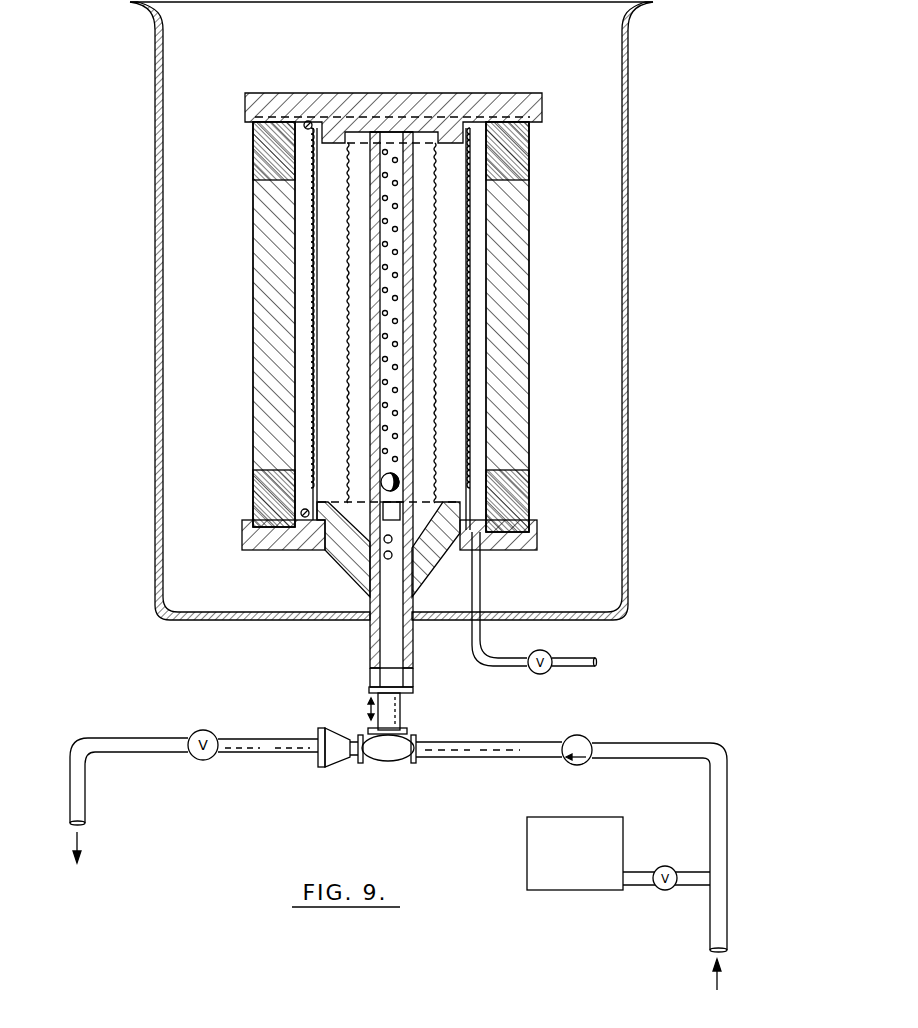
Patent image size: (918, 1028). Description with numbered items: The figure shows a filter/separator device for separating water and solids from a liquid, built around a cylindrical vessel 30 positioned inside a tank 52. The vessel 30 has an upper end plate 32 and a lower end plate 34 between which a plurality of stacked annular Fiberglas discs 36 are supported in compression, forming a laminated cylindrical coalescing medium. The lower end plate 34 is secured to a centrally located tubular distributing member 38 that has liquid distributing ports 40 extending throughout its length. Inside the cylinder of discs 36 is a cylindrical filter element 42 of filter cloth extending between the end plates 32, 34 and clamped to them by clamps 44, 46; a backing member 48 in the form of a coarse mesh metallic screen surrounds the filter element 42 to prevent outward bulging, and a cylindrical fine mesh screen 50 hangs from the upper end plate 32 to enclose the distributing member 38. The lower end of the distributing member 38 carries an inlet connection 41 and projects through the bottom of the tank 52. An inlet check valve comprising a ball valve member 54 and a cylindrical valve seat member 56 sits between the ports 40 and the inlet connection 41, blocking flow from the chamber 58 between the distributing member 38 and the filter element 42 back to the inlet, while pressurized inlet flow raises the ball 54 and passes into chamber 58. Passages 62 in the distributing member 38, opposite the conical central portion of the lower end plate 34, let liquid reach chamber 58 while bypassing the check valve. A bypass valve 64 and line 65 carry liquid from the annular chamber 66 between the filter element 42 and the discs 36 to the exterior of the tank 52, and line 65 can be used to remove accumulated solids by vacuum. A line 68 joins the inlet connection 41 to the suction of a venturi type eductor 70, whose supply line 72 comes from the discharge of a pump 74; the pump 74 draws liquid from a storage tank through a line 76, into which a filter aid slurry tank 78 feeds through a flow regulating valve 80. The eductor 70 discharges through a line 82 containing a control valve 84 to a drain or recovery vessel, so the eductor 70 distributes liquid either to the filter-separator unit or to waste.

The cylindrical vessel 30 is at (548, 80).
The upper end plate 32 is at (330, 103).
The lower end plate 34 is at (270, 547).
The stacked annular Fiberglas discs 36 is at (262, 508).
The tubular distributing member 38 is at (415, 413).
The liquid distributing ports 40 is at (383, 363).
The inlet connection 41 is at (411, 691).
The cylindrical filter element 42 is at (467, 275).
The clamp 44 is at (306, 120).
The clamp 46 is at (305, 520).
The backing member 48 is at (310, 360).
The cylindrical fine mesh screen 50 is at (434, 219).
The tank 52 is at (627, 300).
The ball valve member 54 is at (400, 478).
The cylindrical valve seat member 56 is at (410, 505).
The chamber 58 is at (341, 299).
The passages 62 is at (393, 560).
The bypass valve 64 is at (540, 674).
The line 65 is at (592, 668).
The annular chamber 66 is at (477, 343).
The line 68 is at (400, 712).
The eductor 70 is at (385, 761).
The supply line 72 is at (497, 745).
The pump 74 is at (588, 738).
The line 76 is at (727, 790).
The filter aid slurry tank 78 is at (590, 818).
The flow regulating valve 80 is at (668, 866).
The line 82 is at (267, 740).
The control valve 84 is at (205, 730).